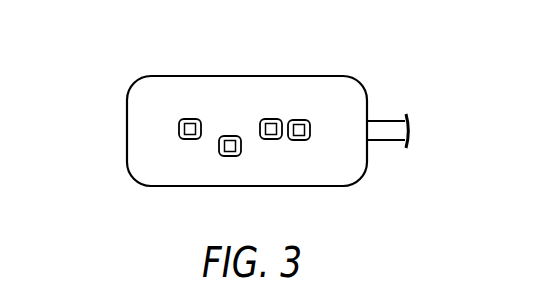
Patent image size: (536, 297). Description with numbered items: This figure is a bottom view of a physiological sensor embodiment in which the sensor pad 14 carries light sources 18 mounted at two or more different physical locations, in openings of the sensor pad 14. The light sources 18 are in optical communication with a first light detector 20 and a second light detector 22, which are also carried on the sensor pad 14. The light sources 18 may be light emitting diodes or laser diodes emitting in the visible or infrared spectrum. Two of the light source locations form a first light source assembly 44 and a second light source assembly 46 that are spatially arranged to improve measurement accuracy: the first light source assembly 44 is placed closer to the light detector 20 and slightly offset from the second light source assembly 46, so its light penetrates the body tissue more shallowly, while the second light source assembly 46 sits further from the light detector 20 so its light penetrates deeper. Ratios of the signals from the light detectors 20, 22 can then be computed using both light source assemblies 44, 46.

The sensor pad 14 is at (127, 137).
The light sources 18 is at (190, 109).
The first light detector 20 is at (271, 119).
The second light detector 22 is at (299, 141).
The first light source assembly 44 is at (231, 136).
The second light source assembly 46 is at (179, 129).